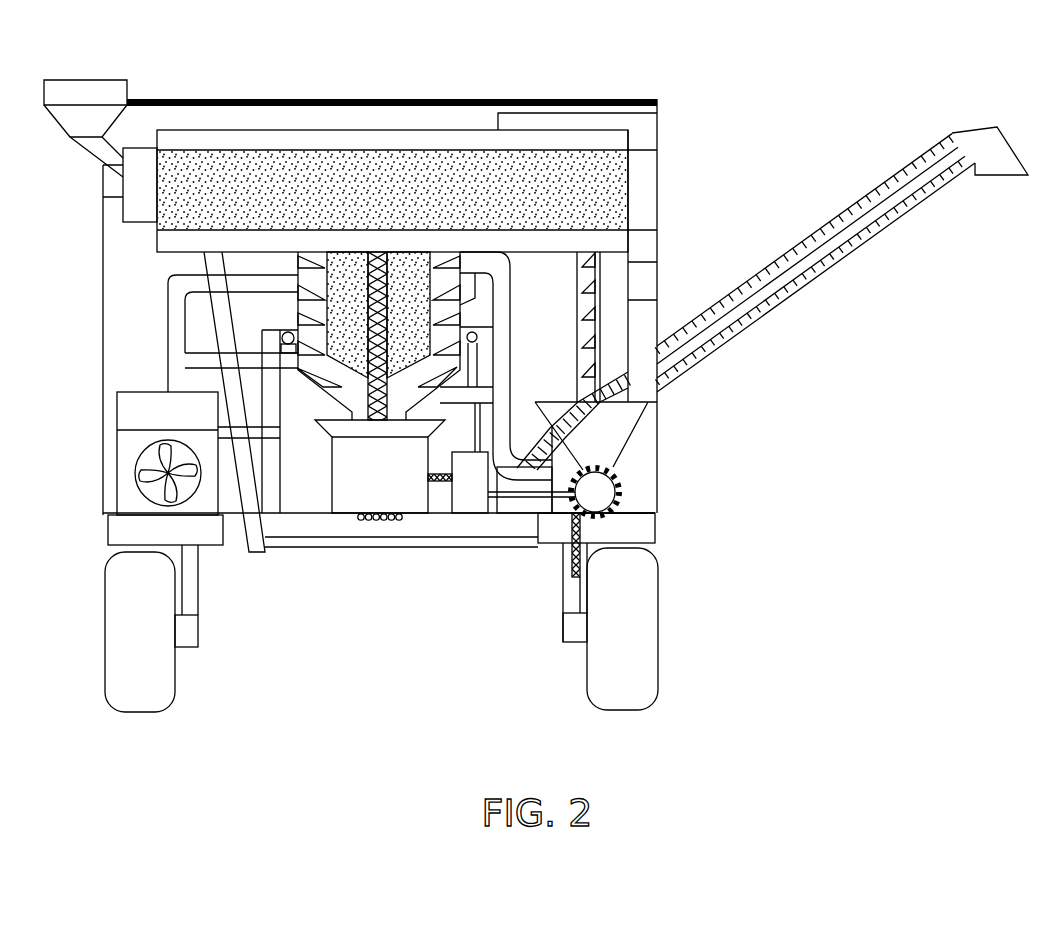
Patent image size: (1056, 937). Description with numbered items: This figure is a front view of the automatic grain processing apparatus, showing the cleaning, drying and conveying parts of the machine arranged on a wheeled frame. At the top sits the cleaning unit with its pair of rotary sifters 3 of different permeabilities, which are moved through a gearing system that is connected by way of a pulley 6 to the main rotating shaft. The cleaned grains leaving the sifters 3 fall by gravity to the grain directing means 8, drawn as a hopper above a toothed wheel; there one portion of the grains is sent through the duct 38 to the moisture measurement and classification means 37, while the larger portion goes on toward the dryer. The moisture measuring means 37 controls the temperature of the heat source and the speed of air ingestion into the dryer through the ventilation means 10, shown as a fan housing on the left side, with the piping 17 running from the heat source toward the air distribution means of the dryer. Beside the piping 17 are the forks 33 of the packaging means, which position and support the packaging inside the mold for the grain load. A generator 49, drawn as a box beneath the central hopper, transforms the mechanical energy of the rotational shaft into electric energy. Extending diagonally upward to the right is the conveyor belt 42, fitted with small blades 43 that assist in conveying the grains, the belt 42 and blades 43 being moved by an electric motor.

The rotary sifters 3 is at (600, 130).
The pulley 6 is at (254, 513).
The grain directing means 8 is at (586, 445).
The ventilation means 10 is at (117, 488).
The piping 17 is at (176, 348).
The forks 33 is at (282, 338).
The moisture measurement and classification means 37 is at (459, 498).
The duct 38 is at (500, 497).
The conveyor belt 42 is at (903, 165).
The small blades 43 is at (947, 143).
The generator 49 is at (369, 488).